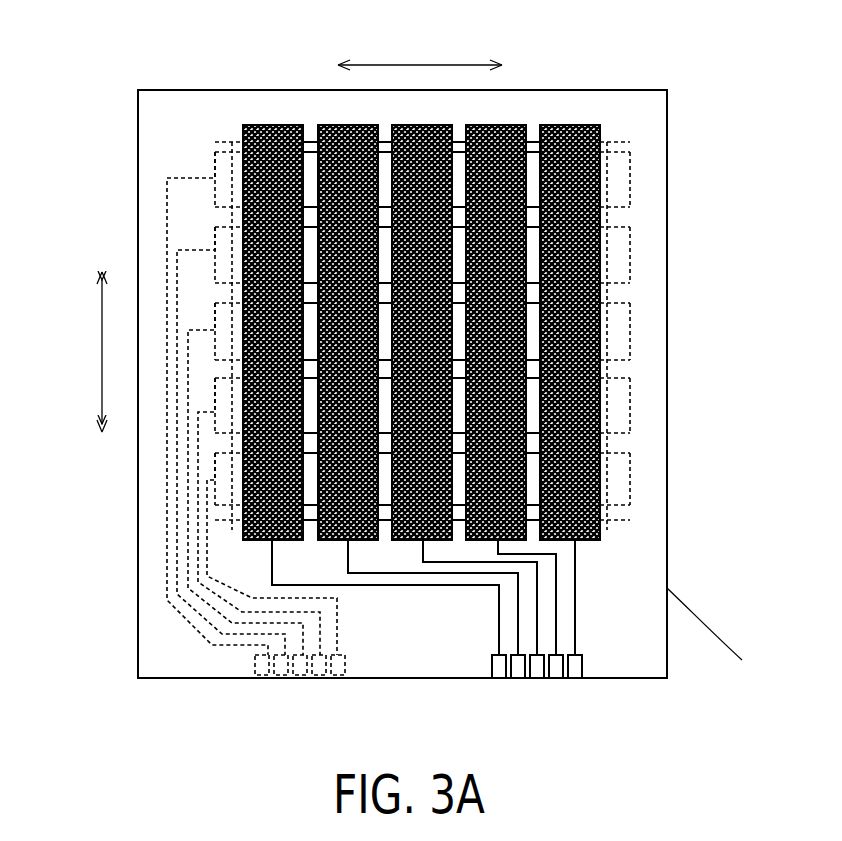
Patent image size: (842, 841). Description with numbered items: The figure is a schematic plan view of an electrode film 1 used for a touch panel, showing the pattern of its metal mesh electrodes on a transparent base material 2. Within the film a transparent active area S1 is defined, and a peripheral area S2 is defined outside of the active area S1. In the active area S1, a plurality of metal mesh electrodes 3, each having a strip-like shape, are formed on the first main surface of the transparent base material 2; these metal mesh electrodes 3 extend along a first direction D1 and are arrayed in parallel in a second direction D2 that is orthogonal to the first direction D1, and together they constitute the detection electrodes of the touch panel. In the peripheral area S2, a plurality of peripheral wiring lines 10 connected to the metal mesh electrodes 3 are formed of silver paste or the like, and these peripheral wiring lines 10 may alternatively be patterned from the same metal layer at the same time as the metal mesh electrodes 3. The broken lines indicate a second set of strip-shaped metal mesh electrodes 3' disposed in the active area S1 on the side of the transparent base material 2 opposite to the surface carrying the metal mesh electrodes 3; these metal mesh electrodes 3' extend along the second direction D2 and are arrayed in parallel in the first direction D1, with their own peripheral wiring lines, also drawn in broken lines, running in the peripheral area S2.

The electrode film 1 is at (116, 130).
The transparent base material 2 is at (711, 634).
The metal mesh electrode 3 is at (498, 275).
The metal mesh electrode 3' is at (685, 338).
The peripheral wiring line 10 is at (165, 552).
The active area S1 is at (600, 142).
The peripheral area S2 is at (418, 633).
The first direction D1 is at (78, 352).
The second direction D2 is at (420, 50).